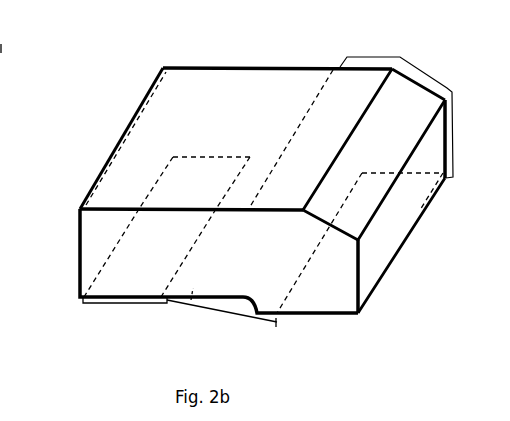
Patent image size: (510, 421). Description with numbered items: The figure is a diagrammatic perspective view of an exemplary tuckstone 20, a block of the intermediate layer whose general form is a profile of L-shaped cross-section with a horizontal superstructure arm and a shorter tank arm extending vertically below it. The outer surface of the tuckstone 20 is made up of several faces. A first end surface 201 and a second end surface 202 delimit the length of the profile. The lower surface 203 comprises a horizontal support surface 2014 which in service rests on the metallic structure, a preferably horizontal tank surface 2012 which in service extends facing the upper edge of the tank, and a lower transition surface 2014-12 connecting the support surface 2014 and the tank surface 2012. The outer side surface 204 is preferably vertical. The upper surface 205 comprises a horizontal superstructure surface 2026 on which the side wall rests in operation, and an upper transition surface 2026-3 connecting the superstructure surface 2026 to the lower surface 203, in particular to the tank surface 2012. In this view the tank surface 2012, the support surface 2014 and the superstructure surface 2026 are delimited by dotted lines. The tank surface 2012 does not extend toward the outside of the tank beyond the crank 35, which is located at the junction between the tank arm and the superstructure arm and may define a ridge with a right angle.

The tuckstone 20 is at (86, 147).
The superstructure surface 2026 is at (180, 110).
The upper surface 205 is at (212, 93).
The second end surface 202 is at (244, 89).
The upper transition surface 2026-3 is at (424, 71).
The outer side surface 204 is at (147, 127).
The support surface 2014 is at (105, 278).
The first end surface 201 is at (206, 264).
The lower transition surface 2014-12 is at (217, 314).
The lower surface 203 is at (191, 300).
The crank 35 is at (255, 320).
The tank surface 2012 is at (342, 283).